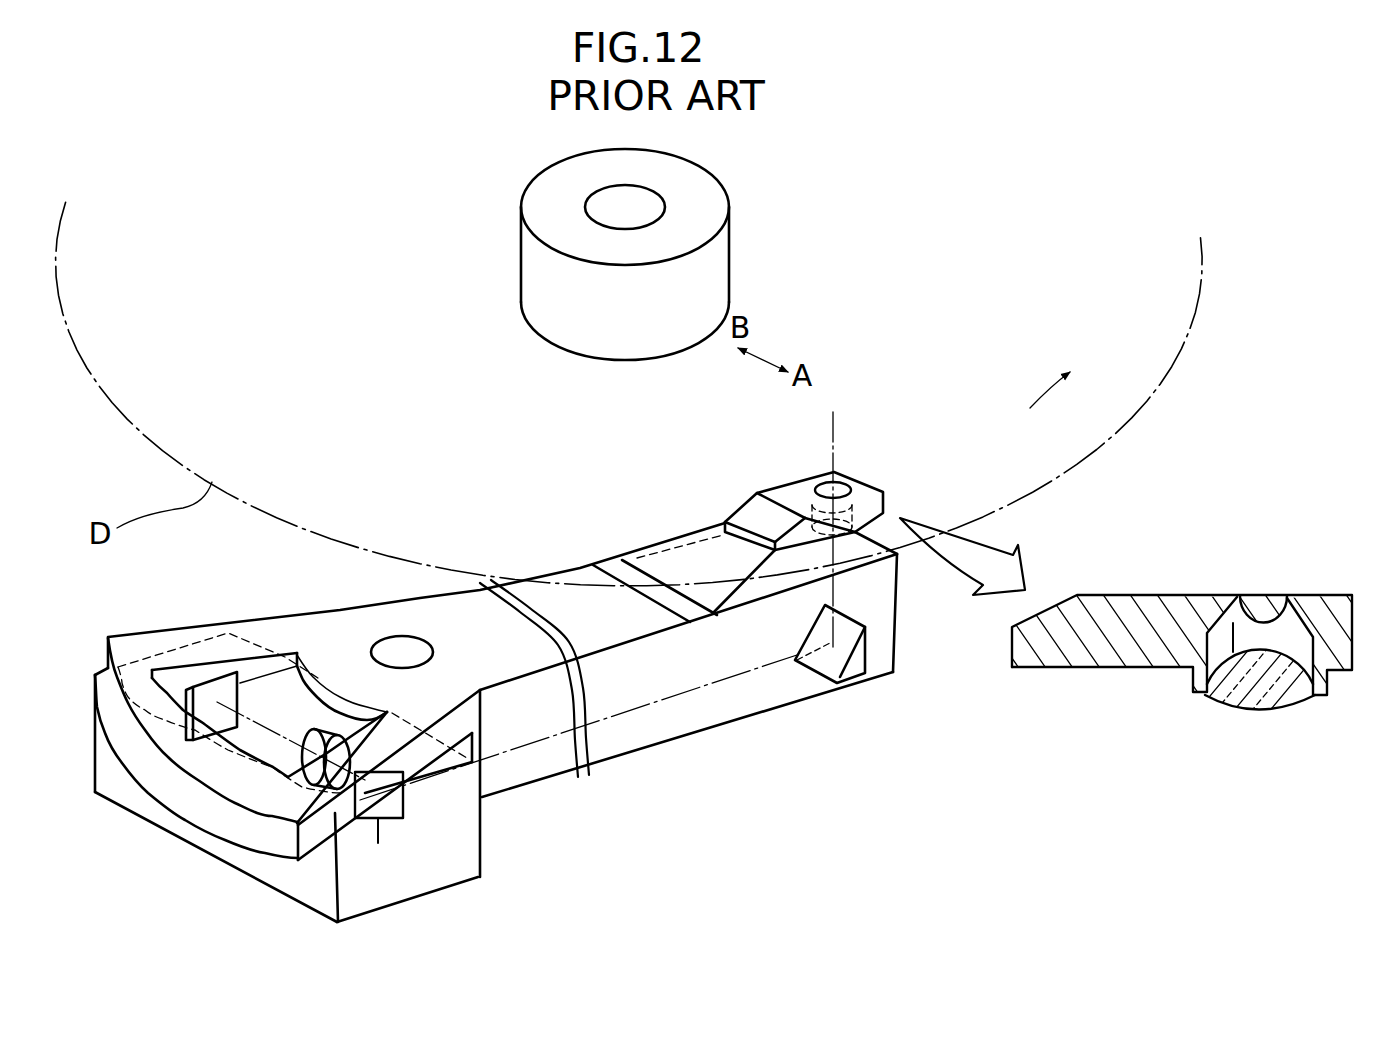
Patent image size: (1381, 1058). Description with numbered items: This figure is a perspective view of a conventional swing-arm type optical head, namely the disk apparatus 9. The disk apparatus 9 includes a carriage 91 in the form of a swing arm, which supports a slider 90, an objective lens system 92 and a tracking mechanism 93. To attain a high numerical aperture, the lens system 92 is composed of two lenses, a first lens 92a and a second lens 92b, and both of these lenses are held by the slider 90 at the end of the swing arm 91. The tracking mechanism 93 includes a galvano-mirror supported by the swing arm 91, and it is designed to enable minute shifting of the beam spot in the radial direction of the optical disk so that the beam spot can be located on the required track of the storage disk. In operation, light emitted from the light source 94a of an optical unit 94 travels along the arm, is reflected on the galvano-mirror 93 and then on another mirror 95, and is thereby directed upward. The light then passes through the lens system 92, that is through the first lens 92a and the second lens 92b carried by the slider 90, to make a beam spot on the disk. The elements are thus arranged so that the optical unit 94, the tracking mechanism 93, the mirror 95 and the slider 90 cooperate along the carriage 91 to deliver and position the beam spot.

The disk apparatus 9 is at (940, 710).
The slider 90 is at (765, 481).
The carriage 91 is at (548, 546).
The objective lens system 92 is at (855, 482).
The first lens 92a is at (887, 500).
The second lens 92b is at (830, 478).
The tracking mechanism 93 is at (398, 830).
The optical unit 94 is at (487, 828).
The light source 94a is at (252, 663).
The mirror 95 is at (867, 650).